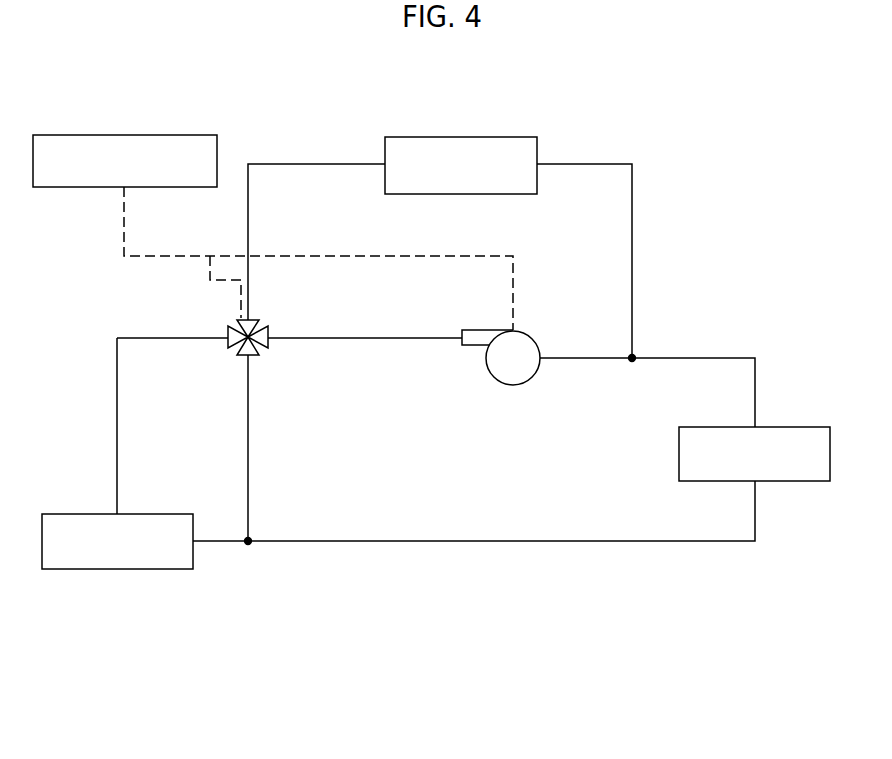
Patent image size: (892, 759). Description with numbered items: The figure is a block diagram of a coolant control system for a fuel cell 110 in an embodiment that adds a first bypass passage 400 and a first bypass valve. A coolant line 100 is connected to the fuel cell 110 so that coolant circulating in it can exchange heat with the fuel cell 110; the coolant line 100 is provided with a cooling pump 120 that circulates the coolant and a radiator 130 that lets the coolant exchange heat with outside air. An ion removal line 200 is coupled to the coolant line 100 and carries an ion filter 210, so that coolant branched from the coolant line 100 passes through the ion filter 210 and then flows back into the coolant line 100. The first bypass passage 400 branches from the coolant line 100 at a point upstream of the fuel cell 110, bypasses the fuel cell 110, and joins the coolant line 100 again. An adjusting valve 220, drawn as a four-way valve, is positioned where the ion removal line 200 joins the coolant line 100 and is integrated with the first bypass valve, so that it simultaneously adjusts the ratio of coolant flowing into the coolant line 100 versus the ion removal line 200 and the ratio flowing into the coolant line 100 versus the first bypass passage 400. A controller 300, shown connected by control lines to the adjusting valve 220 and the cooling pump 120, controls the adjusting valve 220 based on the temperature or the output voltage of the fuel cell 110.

The coolant line 100 is at (537, 542).
The fuel cell 110 is at (98, 570).
The cooling pump 120 is at (513, 386).
The radiator 130 is at (805, 427).
The ion removal line 200 is at (633, 218).
The ion filter 210 is at (510, 137).
The adjusting valve 220 is at (262, 345).
The controller 300 is at (156, 135).
The first bypass passage 400 is at (249, 447).